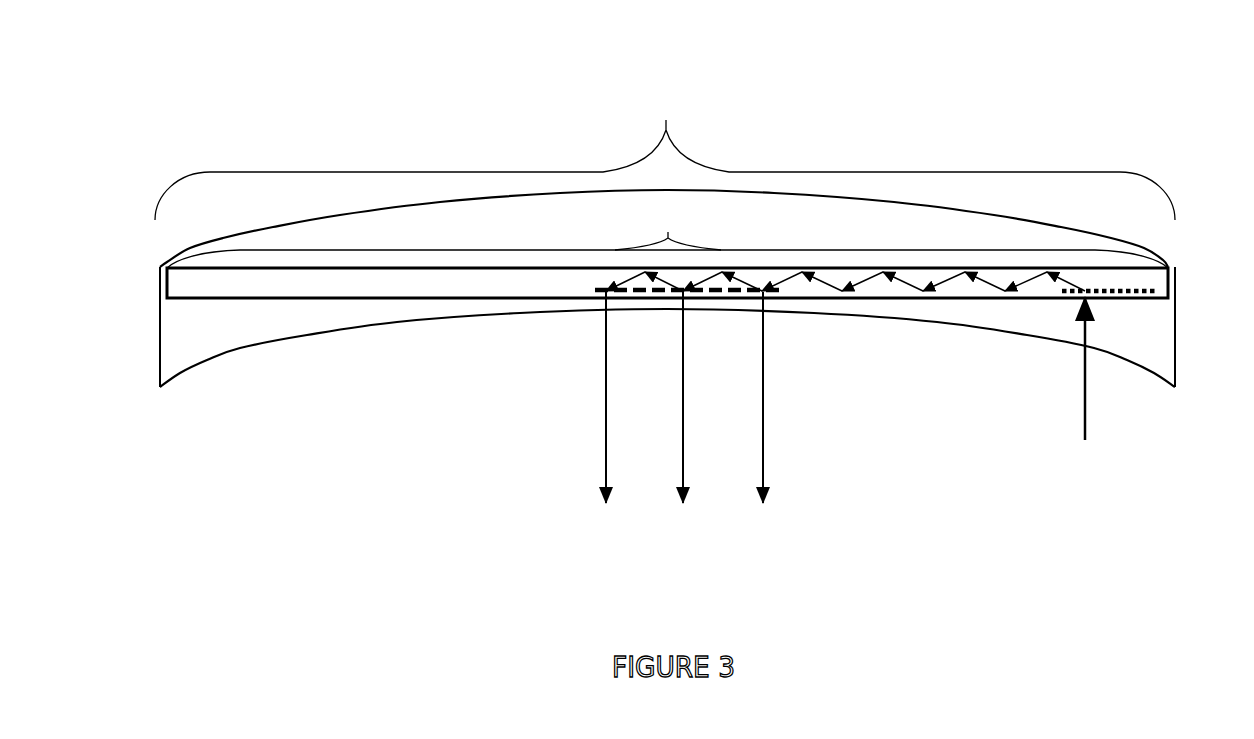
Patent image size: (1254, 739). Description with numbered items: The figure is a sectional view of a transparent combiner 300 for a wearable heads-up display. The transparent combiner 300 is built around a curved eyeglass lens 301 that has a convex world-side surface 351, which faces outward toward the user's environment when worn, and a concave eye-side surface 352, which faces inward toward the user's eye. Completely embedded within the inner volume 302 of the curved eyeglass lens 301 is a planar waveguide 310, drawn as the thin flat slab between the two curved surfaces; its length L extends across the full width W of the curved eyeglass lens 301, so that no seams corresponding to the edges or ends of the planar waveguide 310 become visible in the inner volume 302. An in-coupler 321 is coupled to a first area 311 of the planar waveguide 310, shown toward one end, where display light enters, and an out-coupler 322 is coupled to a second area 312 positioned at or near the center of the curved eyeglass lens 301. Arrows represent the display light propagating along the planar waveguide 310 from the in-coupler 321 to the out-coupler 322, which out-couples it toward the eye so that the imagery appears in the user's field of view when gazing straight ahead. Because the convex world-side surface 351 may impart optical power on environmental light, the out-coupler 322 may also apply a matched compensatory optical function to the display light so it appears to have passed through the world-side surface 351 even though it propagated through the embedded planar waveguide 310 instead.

The transparent combiner 300 is at (194, 99).
The curved eyeglass lens 301 is at (176, 342).
The inner volume 302 is at (667, 241).
The planar waveguide 310 is at (1160, 282).
The first area 311 is at (1122, 292).
The second area 312 is at (649, 298).
The in-coupler 321 is at (1122, 292).
The out-coupler 322 is at (740, 293).
The world-side surface 351 is at (248, 230).
The eye-side surface 352 is at (397, 322).